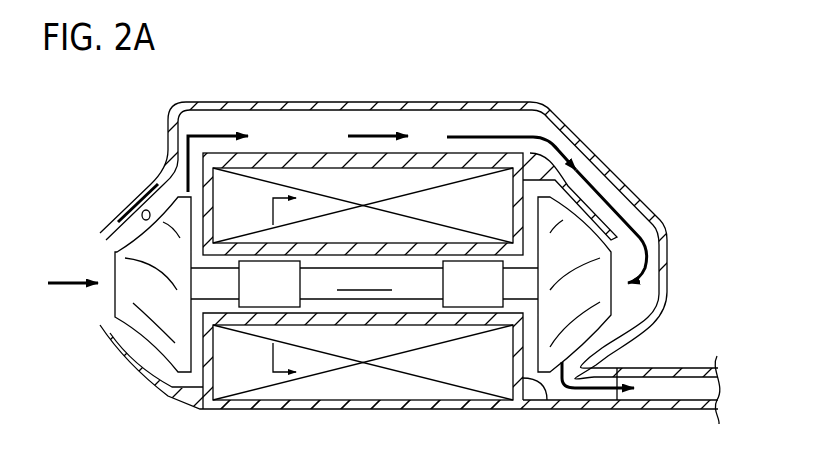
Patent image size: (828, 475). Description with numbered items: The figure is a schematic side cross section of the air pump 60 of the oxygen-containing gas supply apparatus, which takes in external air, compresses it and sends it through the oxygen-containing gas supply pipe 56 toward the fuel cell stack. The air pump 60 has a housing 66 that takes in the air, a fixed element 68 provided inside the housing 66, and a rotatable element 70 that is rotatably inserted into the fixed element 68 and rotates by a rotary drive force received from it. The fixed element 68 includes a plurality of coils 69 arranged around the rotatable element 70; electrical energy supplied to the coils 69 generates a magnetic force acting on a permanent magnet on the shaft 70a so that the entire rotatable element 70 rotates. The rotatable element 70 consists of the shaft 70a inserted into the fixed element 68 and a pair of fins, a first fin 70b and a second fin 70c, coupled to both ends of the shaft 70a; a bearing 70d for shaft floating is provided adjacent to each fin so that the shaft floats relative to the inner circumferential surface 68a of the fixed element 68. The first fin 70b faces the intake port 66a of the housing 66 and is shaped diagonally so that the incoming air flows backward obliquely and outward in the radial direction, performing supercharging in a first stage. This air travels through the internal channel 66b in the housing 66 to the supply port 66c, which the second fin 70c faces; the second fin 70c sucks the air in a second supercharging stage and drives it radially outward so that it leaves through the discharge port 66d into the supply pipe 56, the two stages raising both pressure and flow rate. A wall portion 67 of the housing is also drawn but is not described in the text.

The air pump 60 is at (64, 98).
The oxygen-containing gas supply pipe 56 is at (678, 410).
The housing 66 is at (441, 100).
The intake port 66a is at (100, 303).
The internal channel 66b is at (370, 127).
The supply port 66c is at (612, 237).
The discharge port 66d is at (647, 370).
The partition wall 67 is at (133, 213).
The fixed element 68 is at (547, 409).
The inner circumferential surface 68a is at (393, 312).
The coils 69 is at (378, 385).
The rotatable element 70 is at (430, 256).
The shaft 70a is at (322, 277).
The first fin 70b is at (143, 327).
The second fin 70c is at (604, 300).
The bearing 70d is at (470, 307).